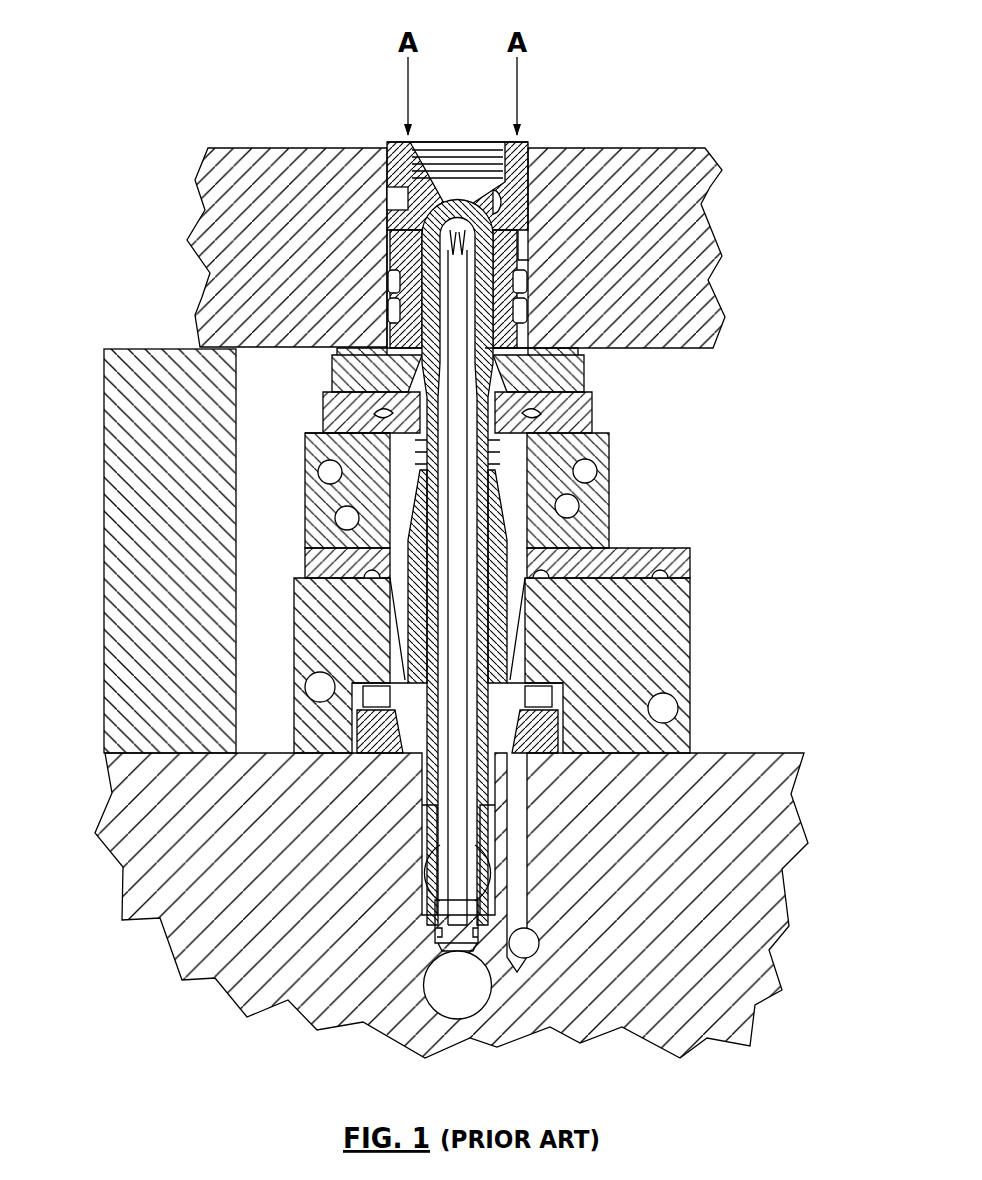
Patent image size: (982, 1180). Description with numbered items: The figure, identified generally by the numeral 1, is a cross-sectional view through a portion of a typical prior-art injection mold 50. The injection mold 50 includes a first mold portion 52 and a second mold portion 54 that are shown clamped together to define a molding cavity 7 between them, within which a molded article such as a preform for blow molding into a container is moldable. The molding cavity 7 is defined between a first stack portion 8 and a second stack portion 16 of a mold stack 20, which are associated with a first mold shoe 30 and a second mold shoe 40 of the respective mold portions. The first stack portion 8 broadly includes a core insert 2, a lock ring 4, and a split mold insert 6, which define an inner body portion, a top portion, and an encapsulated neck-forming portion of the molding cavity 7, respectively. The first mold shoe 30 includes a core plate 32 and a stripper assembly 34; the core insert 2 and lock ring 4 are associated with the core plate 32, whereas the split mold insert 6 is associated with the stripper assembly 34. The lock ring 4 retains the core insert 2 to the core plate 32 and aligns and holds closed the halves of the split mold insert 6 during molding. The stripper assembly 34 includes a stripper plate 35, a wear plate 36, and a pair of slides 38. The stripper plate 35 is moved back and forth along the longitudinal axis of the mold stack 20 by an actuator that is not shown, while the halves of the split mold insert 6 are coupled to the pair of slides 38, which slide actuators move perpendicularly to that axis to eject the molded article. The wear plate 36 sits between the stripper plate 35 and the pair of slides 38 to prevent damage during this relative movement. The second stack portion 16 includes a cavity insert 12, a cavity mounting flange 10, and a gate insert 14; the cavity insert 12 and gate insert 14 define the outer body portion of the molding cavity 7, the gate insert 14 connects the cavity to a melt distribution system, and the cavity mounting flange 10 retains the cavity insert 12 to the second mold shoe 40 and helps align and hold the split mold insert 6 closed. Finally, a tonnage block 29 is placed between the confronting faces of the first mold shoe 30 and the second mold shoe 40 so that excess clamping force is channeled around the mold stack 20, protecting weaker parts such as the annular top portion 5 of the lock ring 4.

The hot runner nozzle assembly 1 is at (449, 130).
The core insert 2 is at (493, 632).
The lock ring 4 is at (520, 537).
The annular top portion 5 is at (303, 452).
The split mold insert 6 is at (601, 419).
The molding cavity 7 is at (485, 340).
The first stack portion 8 is at (535, 575).
The cavity mounting flange 10 is at (703, 204).
The cavity insert 12 is at (532, 307).
The gate insert 14 is at (532, 175).
The second stack portion 16 is at (560, 309).
The mold stack 20 is at (559, 546).
The tonnage block 29 is at (148, 398).
The first mold shoe 30 is at (410, 745).
The core plate 32 is at (431, 887).
The stripper assembly 34 is at (374, 593).
The stripper plate 35 is at (320, 639).
The wear plate 36 is at (298, 564).
The pair of slides 38 is at (298, 507).
The second mold shoe 40 is at (223, 247).
The injection mold 50 is at (618, 331).
The first mold portion 52 is at (806, 302).
The second mold portion 54 is at (768, 266).